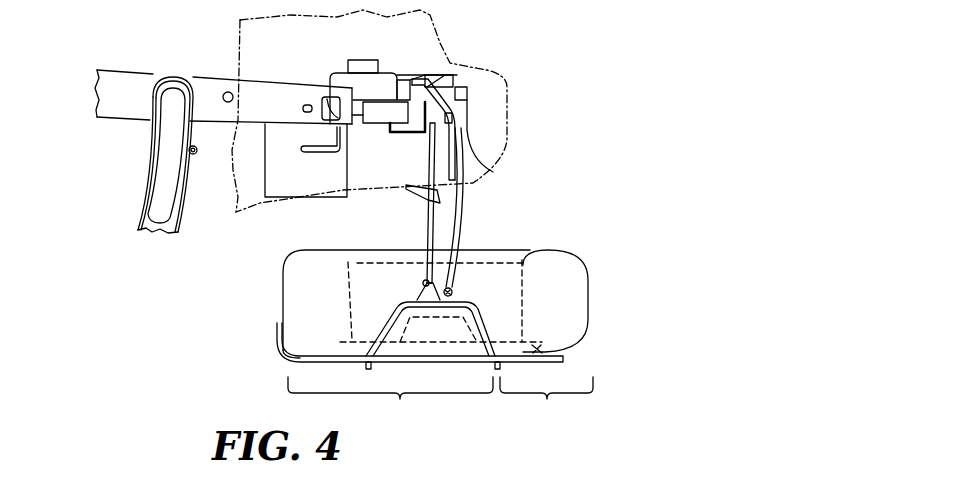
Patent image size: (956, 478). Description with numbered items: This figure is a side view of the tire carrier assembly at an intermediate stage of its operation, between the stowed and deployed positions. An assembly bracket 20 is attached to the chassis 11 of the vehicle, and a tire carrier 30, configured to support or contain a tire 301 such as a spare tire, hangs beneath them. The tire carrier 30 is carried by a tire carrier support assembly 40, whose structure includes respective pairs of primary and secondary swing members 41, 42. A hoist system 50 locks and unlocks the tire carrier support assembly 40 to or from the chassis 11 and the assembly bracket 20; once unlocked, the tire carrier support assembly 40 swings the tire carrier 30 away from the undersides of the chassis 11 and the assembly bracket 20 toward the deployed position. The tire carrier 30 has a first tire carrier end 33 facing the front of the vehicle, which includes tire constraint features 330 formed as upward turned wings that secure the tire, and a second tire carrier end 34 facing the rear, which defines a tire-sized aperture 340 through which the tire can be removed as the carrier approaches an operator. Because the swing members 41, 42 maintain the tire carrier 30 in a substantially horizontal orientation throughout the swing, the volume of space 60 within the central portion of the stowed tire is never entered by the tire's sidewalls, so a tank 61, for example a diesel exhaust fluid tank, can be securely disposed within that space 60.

The chassis 11 is at (150, 97).
The volume of space 60 is at (285, 148).
The tank 61 is at (263, 178).
The assembly bracket 20 is at (461, 91).
The tire carrier support assembly 40 is at (438, 211).
The primary swing member 41 is at (427, 242).
The secondary swing member 42 is at (452, 246).
The hoist system 50 is at (428, 192).
The tire carrier 30 is at (430, 274).
The tire 301 is at (527, 260).
The tire constraint features 330 is at (380, 332).
The tire-sized aperture 340 is at (527, 352).
The first tire carrier end 33 is at (412, 438).
The second tire carrier end 34 is at (560, 438).